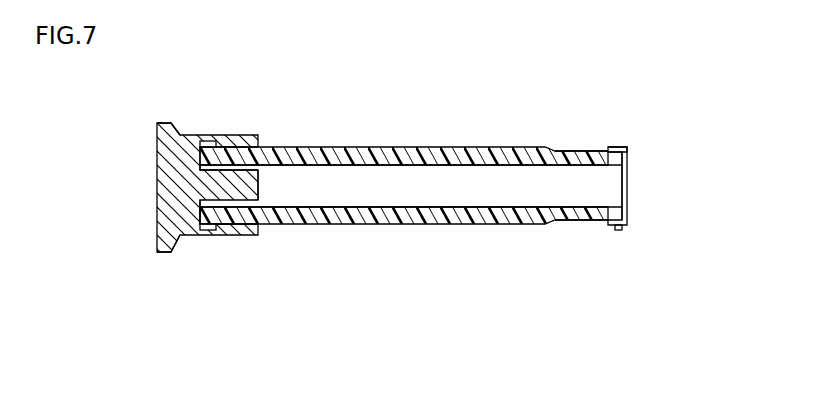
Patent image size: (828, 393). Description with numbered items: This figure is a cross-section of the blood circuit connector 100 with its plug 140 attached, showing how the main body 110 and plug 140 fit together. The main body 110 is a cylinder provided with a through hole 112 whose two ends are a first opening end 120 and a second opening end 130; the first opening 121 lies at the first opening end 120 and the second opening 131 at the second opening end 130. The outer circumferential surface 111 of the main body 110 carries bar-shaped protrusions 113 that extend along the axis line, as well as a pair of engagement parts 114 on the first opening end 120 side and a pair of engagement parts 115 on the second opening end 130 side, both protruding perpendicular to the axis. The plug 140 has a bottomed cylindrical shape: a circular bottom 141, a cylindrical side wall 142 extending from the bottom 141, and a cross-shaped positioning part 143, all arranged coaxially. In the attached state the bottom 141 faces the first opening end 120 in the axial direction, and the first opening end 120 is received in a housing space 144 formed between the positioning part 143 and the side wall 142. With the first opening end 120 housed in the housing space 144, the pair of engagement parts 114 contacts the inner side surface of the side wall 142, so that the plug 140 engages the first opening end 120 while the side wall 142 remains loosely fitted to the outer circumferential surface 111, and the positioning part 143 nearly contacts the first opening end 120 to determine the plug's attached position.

The blood circuit connector 100 is at (658, 77).
The main body 110 is at (387, 115).
The outer circumferential surface 111 is at (577, 151).
The through hole 112 is at (548, 207).
The bar-shaped protrusions 113 is at (455, 148).
The engagement parts 114 is at (208, 143).
The engagement parts 115 is at (612, 148).
The first opening end 120 is at (200, 213).
The first opening 121 is at (200, 170).
The second opening end 130 is at (627, 216).
The second opening 131 is at (627, 184).
The plug 140 is at (140, 199).
The bottom 141 is at (160, 123).
The side wall 142 is at (182, 247).
The positioning part 143 is at (258, 183).
The housing space 144 is at (242, 228).